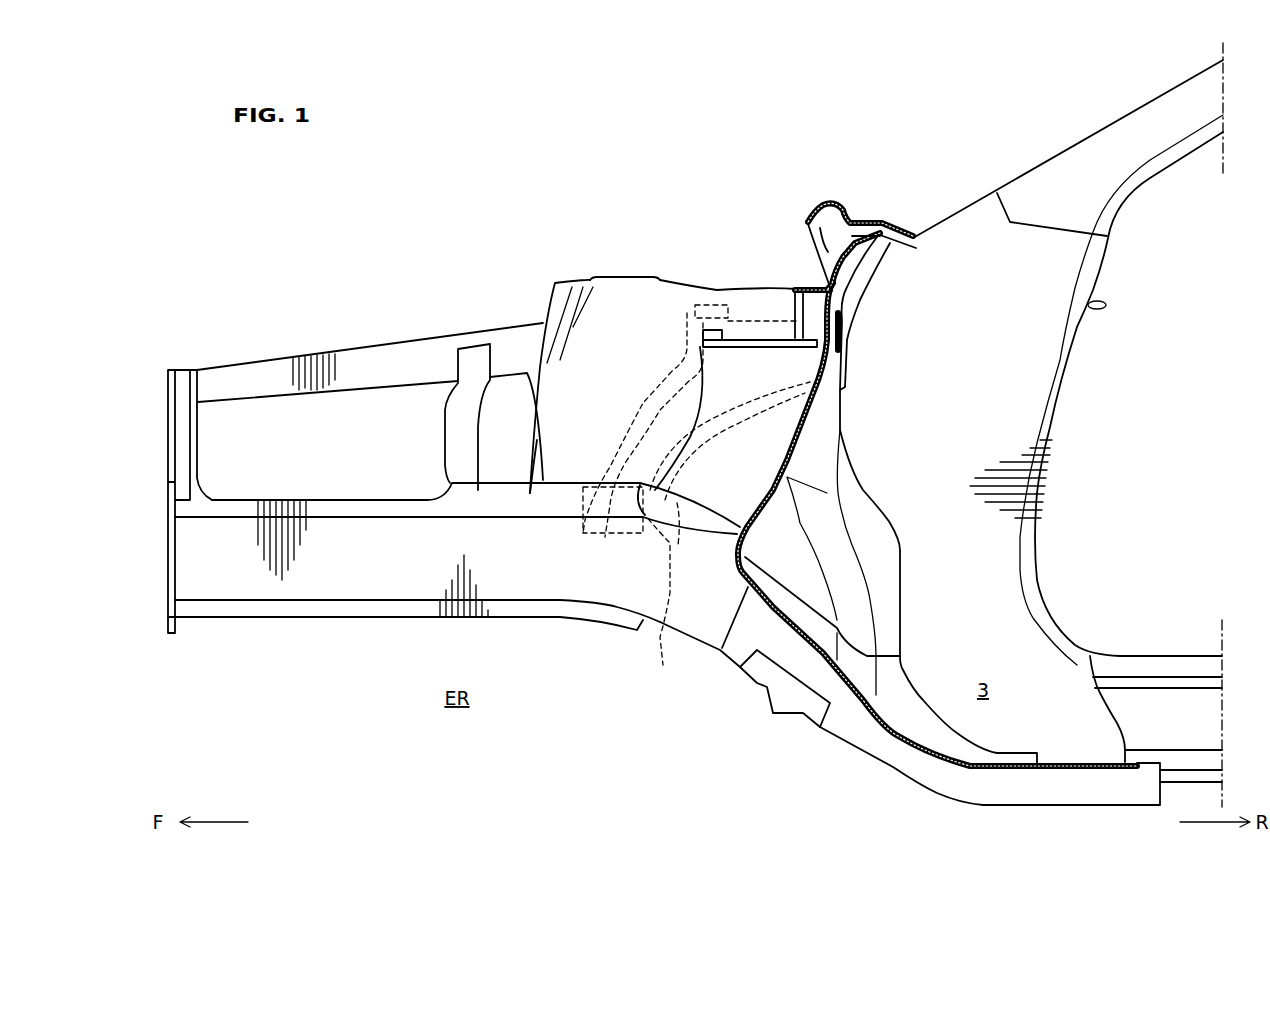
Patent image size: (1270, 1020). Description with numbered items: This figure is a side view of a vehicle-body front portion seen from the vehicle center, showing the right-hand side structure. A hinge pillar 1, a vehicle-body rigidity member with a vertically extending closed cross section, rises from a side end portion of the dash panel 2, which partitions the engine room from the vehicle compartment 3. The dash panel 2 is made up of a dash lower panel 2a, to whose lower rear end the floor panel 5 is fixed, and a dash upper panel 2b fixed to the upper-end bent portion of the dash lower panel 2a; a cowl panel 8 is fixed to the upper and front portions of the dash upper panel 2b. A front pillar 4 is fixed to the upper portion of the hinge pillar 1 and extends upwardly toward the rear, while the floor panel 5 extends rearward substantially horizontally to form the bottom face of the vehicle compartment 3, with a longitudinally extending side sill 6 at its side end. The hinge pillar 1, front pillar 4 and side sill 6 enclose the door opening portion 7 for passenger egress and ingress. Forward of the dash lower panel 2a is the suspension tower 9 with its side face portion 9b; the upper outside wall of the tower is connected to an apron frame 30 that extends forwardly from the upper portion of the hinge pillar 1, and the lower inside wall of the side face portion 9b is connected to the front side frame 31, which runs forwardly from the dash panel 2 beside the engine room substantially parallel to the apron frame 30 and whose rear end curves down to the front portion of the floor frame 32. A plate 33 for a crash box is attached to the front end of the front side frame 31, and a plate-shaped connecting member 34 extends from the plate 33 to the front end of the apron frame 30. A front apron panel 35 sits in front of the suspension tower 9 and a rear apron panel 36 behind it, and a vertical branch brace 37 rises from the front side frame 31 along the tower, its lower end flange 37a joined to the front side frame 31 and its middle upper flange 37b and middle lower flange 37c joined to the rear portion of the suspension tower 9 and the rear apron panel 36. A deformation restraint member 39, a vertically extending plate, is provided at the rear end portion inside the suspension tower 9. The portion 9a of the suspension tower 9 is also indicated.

The hinge pillar 1 is at (1030, 393).
The dash panel 2 is at (863, 490).
The dash lower panel 2a is at (880, 570).
The dash upper panel 2b is at (875, 262).
The vehicle compartment 3 is at (910, 713).
The front pillar 4 is at (1128, 130).
The floor panel 5 is at (913, 748).
The side sill 6 is at (1153, 665).
The door opening portion 7 is at (1088, 305).
The cowl panel 8 is at (833, 202).
The suspension tower 9 is at (602, 261).
The suspension tower upper portion 9a is at (630, 278).
The side face portion 9b is at (570, 460).
The apron frame 30 is at (390, 350).
The front side frame 31 is at (368, 576).
The floor frame 32 is at (845, 710).
The plate 33 is at (167, 625).
The connecting member 34 is at (185, 378).
The front apron panel 35 is at (475, 355).
The rear apron panel 36 is at (718, 490).
The vertical branch brace 37 is at (612, 545).
The lower end flange 37a is at (590, 535).
The middle upper flange 37b is at (625, 420).
The middle lower flange 37c is at (663, 588).
The deformation restraint member 39 is at (712, 307).